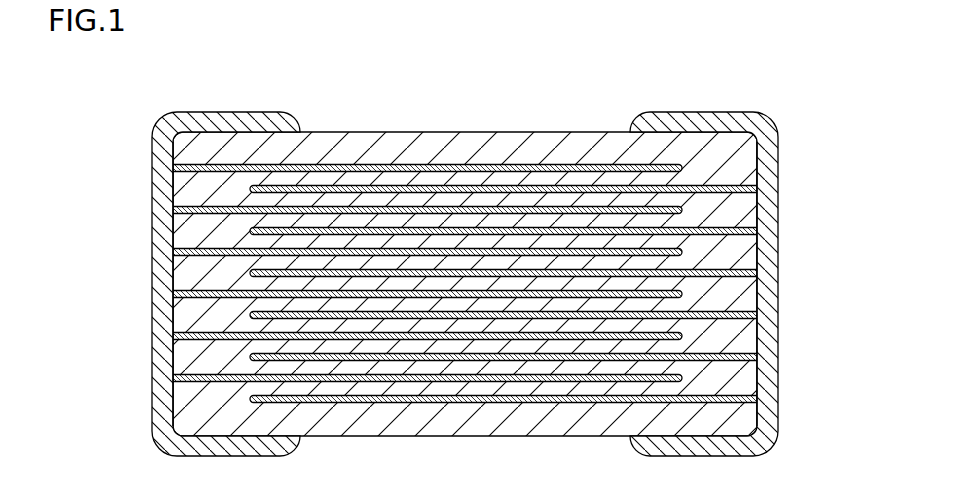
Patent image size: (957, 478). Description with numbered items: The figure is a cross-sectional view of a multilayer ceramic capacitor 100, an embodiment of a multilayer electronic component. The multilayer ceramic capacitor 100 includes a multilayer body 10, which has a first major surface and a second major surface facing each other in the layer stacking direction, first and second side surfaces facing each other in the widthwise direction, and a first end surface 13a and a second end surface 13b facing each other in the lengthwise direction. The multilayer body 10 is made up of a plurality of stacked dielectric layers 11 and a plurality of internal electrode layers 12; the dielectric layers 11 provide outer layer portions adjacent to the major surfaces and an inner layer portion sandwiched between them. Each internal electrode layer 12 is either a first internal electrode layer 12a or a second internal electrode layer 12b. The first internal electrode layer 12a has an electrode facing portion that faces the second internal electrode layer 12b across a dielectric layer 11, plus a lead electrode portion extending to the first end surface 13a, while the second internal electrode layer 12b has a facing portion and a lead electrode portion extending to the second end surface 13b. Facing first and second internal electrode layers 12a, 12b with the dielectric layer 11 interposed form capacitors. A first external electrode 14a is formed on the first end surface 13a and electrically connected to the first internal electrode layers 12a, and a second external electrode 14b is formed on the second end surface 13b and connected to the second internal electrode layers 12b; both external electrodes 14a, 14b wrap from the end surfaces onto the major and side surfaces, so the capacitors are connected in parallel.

The multilayer ceramic capacitor 100 is at (475, 240).
The multilayer body 10 is at (486, 113).
The dielectric layer 11 is at (567, 177).
The internal electrode layer 12 is at (465, 214).
The first internal electrode layer 12a is at (421, 165).
The second internal electrode layer 12b is at (367, 187).
The first end surface 13a is at (170, 305).
The second end surface 13b is at (760, 305).
The first external electrode 14a is at (162, 241).
The second external electrode 14b is at (772, 241).